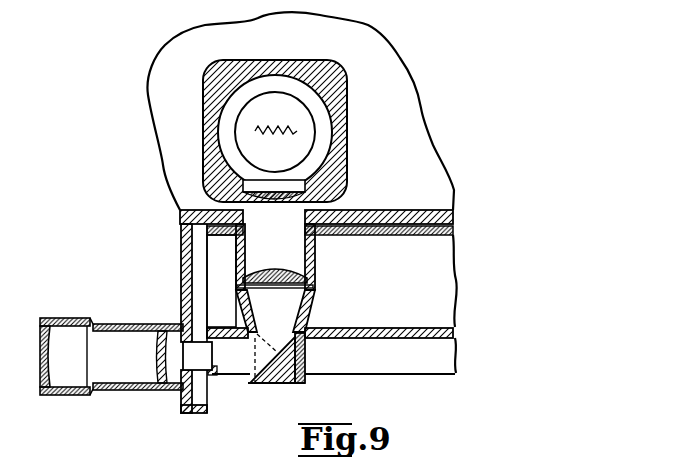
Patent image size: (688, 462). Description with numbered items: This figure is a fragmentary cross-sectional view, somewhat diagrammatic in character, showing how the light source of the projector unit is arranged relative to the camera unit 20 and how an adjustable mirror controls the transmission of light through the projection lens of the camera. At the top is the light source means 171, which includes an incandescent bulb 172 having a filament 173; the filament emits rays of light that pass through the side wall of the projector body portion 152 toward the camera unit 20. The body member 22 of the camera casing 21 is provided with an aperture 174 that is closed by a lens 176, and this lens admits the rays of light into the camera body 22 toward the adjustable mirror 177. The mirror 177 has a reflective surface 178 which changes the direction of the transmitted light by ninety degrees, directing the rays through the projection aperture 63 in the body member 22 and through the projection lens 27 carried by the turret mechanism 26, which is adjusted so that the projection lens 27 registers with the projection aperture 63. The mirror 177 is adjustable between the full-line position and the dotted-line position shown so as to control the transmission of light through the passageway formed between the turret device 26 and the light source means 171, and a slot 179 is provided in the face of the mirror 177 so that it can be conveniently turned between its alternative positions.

The camera unit 20 is at (158, 305).
The camera casing 21 is at (392, 220).
The body member 22 is at (453, 233).
The turret mechanism 26 is at (182, 406).
The projection lens 27 is at (108, 322).
The projection aperture 63 is at (198, 358).
The body portion 152 is at (425, 145).
The light source means 171 is at (303, 62).
The incandescent bulb 172 is at (312, 122).
The filament 173 is at (300, 129).
The aperture 174 is at (310, 252).
The lens 176 is at (313, 287).
The adjustable mirror 177 is at (306, 360).
The reflective surface 178 is at (275, 336).
The slot 179 is at (275, 384).